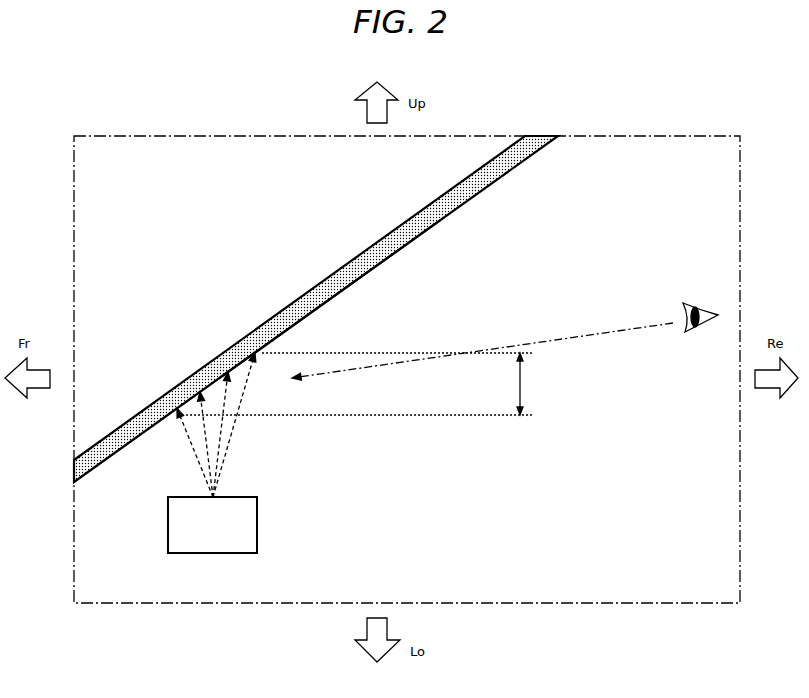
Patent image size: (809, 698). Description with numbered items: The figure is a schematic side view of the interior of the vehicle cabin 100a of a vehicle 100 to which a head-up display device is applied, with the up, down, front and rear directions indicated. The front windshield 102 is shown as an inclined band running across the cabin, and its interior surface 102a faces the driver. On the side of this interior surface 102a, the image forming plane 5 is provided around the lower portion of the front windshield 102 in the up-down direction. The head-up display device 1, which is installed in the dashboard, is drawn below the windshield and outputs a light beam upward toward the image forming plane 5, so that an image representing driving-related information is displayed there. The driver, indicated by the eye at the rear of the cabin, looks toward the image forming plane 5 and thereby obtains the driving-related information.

The vehicle 100 is at (87, 115).
The vehicle cabin 100a is at (595, 184).
The front windshield 102 is at (322, 280).
The interior surface 102a is at (336, 309).
The head-up display device 1 is at (257, 521).
The image forming plane 5 is at (357, 384).